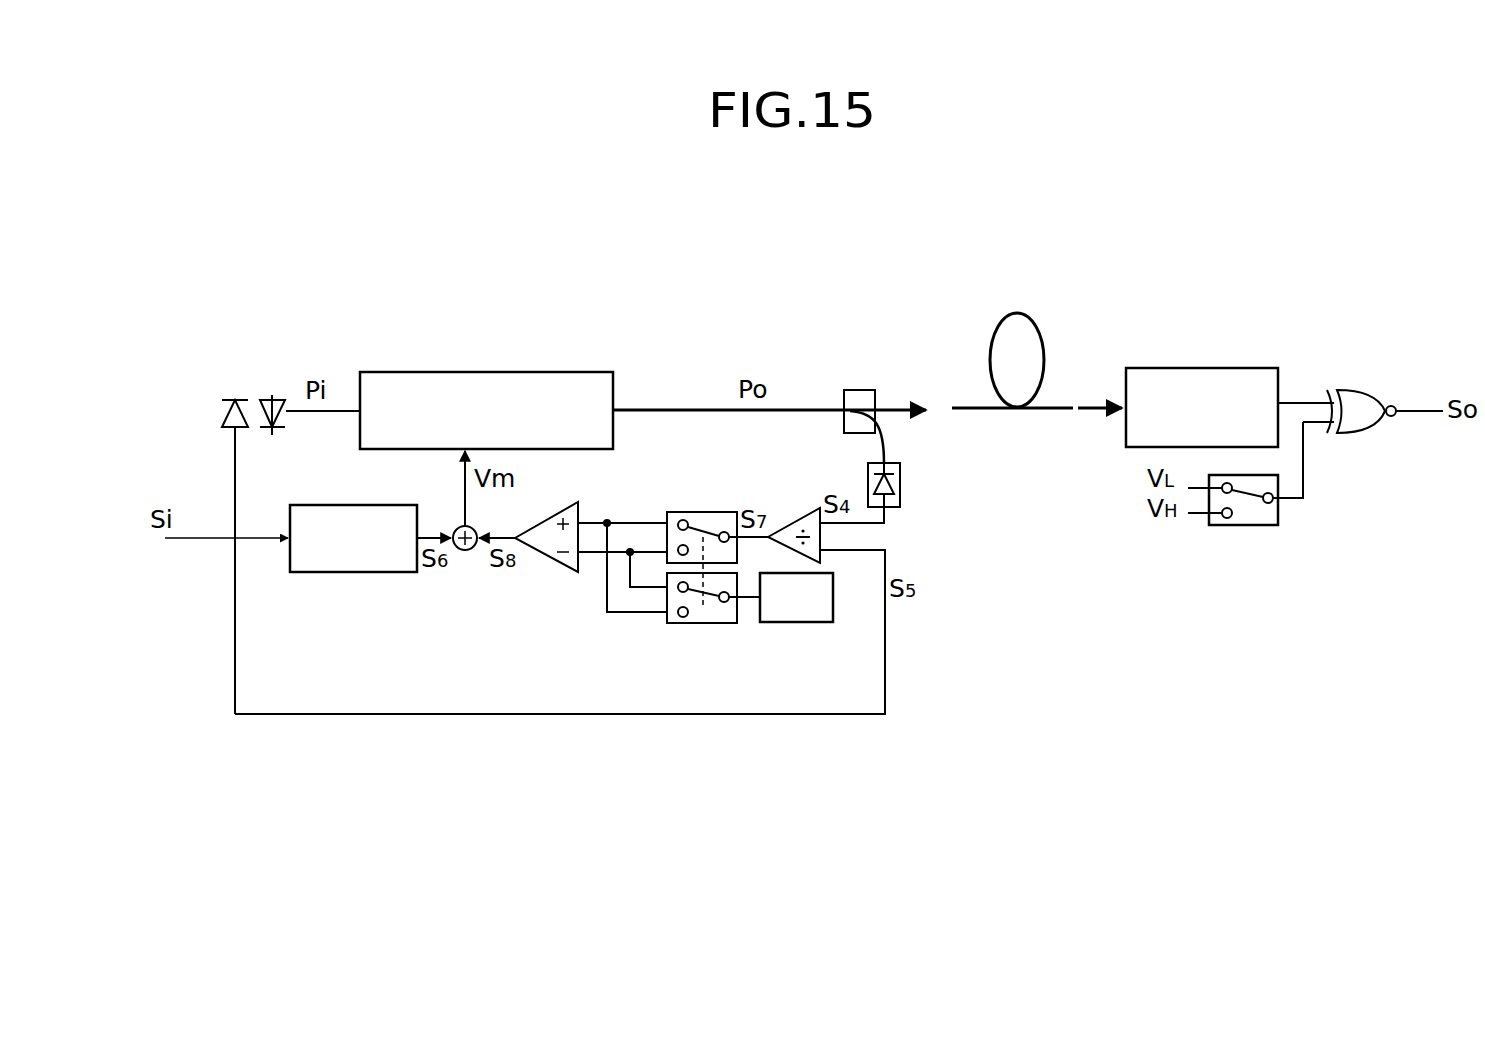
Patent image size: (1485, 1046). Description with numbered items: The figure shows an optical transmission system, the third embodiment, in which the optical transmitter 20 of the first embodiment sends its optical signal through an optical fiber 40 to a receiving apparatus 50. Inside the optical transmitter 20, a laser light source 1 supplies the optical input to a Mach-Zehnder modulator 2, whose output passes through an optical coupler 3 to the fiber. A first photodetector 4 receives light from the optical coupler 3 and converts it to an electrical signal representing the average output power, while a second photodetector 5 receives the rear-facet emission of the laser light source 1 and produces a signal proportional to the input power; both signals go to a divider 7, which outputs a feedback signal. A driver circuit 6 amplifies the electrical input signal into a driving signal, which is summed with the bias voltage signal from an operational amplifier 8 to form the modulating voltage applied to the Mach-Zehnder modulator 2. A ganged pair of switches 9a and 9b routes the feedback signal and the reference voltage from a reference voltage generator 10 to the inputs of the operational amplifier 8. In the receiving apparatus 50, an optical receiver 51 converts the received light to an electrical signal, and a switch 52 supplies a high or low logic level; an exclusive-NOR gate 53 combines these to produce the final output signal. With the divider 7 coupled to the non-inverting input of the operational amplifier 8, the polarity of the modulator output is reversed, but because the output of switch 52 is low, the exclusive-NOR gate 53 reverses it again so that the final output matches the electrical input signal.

The laser light source 1 is at (265, 395).
The Mach-Zehnder modulator 2 is at (575, 370).
The optical coupler 3 is at (862, 390).
The first photodetector 4 is at (900, 488).
The second photodetector 5 is at (228, 416).
The driver circuit 6 is at (357, 572).
The divider 7 is at (797, 520).
The operational amplifier 8 is at (546, 560).
The switch 9a is at (700, 510).
The switch 9b is at (700, 625).
The reference voltage generator 10 is at (797, 625).
The optical transmitter 20 is at (708, 352).
The optical fiber 40 is at (1012, 376).
The receiving apparatus 50 is at (1301, 302).
The optical receiver 51 is at (1210, 367).
The switch 52 is at (1247, 525).
The exclusive-NOR gate 53 is at (1350, 385).